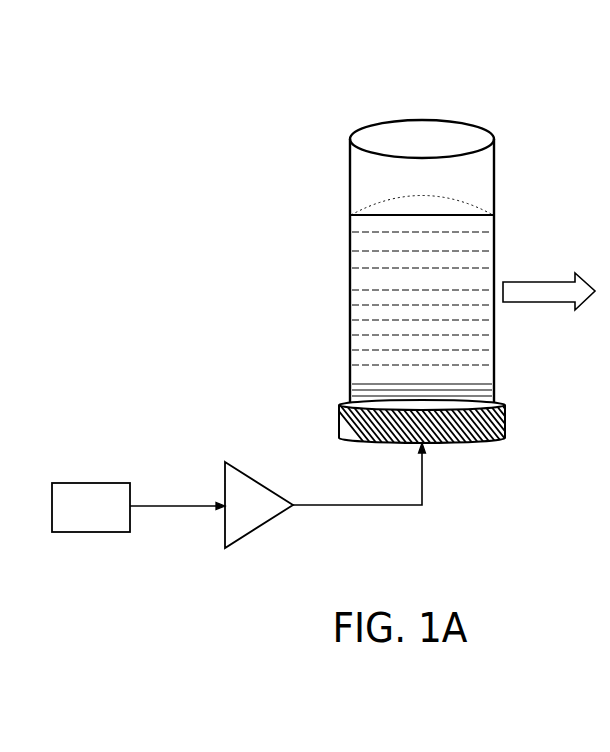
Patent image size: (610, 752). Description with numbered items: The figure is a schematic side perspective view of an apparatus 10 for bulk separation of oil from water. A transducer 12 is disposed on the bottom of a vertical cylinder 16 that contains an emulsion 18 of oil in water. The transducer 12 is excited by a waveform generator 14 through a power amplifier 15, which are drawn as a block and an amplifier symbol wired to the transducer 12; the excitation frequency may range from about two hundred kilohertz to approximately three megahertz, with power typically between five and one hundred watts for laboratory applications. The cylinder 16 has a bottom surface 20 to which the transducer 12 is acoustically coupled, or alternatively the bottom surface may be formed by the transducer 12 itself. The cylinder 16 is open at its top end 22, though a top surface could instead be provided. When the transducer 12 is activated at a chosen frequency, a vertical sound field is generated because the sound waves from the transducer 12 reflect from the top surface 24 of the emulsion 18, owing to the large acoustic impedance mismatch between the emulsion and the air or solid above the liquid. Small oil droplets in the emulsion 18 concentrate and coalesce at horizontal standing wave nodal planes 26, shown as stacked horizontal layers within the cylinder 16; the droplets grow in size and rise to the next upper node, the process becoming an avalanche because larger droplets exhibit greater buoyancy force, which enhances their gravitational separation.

The apparatus 10 is at (437, 113).
The transducer 12 is at (358, 447).
The waveform generator 14 is at (78, 519).
The power amplifier 15 is at (236, 517).
The vertical cylinder 16 is at (342, 290).
The emulsion 18 is at (397, 265).
The bottom surface 20 is at (341, 402).
The top end 22 is at (371, 121).
The top surface 24 is at (521, 271).
The horizontal standing wave nodal planes 26 is at (350, 333).